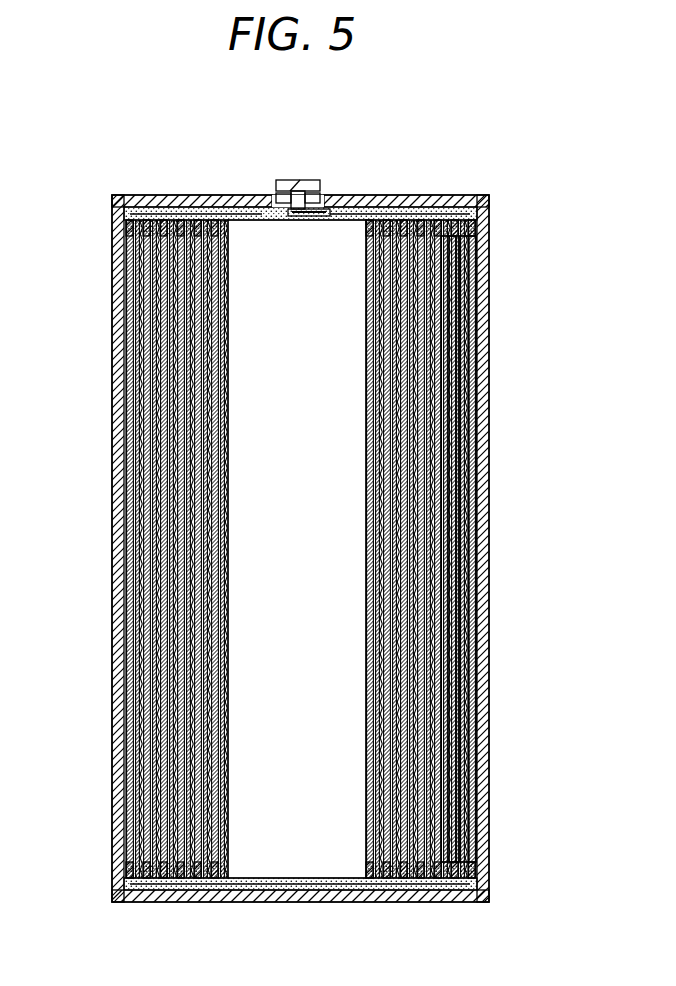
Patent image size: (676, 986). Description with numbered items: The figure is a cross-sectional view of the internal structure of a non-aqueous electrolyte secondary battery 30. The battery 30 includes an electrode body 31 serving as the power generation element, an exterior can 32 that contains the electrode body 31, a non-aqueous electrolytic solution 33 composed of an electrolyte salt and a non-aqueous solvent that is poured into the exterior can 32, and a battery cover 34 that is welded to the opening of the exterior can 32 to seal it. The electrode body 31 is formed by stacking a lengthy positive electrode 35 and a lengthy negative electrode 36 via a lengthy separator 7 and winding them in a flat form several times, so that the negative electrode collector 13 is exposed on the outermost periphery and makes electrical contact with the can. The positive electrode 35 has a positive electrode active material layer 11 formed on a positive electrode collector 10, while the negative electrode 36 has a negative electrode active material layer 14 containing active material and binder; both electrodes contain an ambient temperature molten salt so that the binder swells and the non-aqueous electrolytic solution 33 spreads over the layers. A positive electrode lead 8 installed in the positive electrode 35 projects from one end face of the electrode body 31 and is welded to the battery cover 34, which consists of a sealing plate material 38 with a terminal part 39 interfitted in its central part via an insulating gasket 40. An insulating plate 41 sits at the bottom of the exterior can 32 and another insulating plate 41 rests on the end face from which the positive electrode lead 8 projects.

The battery 30 is at (42, 124).
The exterior can 32 is at (113, 378).
The battery cover 34 is at (136, 193).
The sealing plate material 38 is at (455, 205).
The insulating plate 41 is at (124, 209).
The non-aqueous electrolytic solution 33 is at (262, 212).
The terminal part 39 is at (293, 181).
The insulating gasket 40 is at (278, 196).
The positive electrode lead 8 is at (329, 209).
The electrode body 31 is at (342, 241).
The negative electrode active material layer 14 is at (478, 263).
The negative electrode collector 13 is at (478, 300).
The separator 7 is at (478, 356).
The positive electrode active material layer 11 is at (478, 420).
The positive electrode collector 10 is at (478, 466).
The negative electrode 36 is at (576, 258).
The positive electrode 35 is at (576, 405).